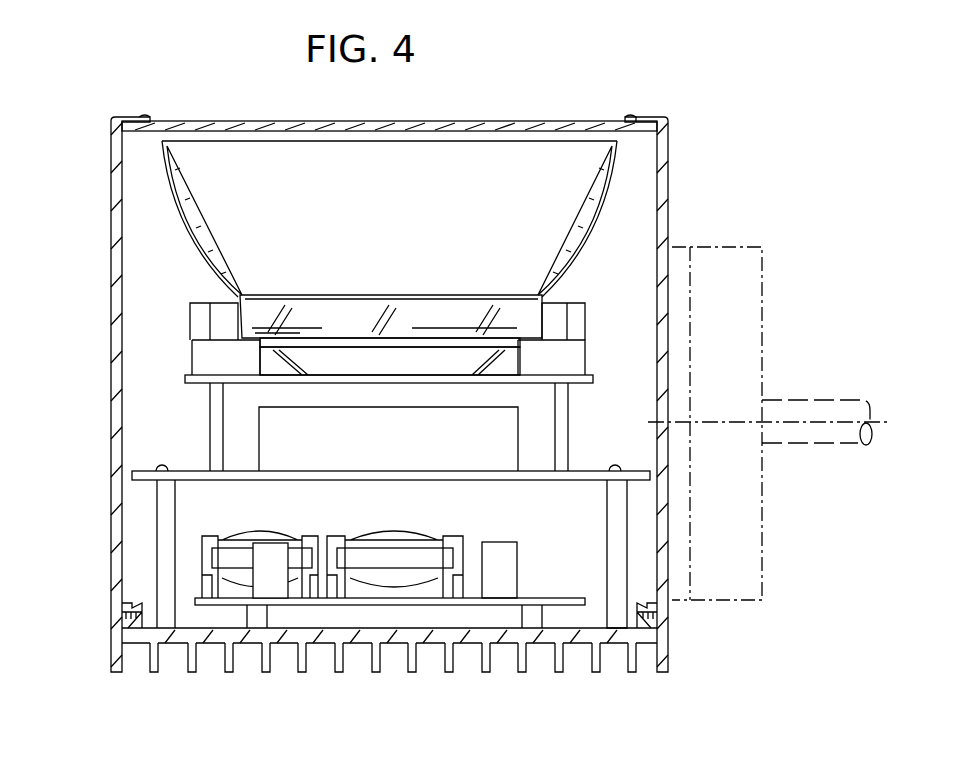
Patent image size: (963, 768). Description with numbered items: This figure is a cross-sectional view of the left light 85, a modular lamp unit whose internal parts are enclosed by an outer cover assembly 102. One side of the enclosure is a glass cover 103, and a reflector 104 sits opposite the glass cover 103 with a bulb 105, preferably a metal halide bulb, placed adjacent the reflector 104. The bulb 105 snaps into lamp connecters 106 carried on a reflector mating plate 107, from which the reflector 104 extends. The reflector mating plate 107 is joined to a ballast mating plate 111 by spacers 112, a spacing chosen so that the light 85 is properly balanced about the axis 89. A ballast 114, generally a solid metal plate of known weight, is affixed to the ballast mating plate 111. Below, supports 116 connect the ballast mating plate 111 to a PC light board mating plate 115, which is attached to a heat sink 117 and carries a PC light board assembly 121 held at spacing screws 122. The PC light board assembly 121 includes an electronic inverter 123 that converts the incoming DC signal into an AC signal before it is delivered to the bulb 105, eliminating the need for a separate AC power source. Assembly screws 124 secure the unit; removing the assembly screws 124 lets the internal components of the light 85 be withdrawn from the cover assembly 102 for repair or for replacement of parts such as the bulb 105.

The left light 85 is at (103, 393).
The axis 89 is at (823, 420).
The outer cover assembly 102 is at (110, 511).
The glass cover 103 is at (557, 125).
The reflector 104 is at (578, 185).
The bulb 105 is at (465, 300).
The lamp connecters 106 is at (202, 356).
The reflector mating plate 107 is at (593, 378).
The ballast mating plate 111 is at (660, 480).
The spacers 112 is at (217, 412).
The ballast 114 is at (498, 447).
The PC light board mating plate 115 is at (598, 633).
The supports 116 is at (163, 545).
The heat sink 117 is at (335, 665).
The PC light board assembly 121 is at (573, 607).
The spacing screws 122 is at (257, 622).
The electronic inverter 123 is at (532, 553).
The assembly screws 124 is at (113, 615).